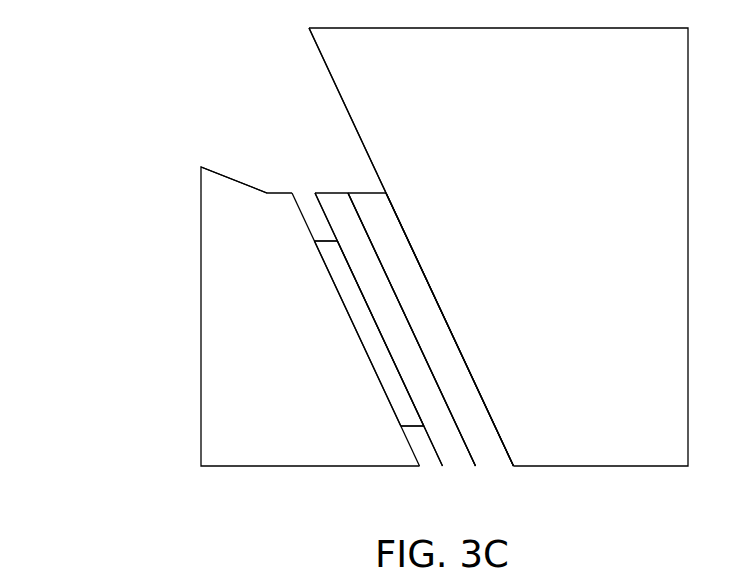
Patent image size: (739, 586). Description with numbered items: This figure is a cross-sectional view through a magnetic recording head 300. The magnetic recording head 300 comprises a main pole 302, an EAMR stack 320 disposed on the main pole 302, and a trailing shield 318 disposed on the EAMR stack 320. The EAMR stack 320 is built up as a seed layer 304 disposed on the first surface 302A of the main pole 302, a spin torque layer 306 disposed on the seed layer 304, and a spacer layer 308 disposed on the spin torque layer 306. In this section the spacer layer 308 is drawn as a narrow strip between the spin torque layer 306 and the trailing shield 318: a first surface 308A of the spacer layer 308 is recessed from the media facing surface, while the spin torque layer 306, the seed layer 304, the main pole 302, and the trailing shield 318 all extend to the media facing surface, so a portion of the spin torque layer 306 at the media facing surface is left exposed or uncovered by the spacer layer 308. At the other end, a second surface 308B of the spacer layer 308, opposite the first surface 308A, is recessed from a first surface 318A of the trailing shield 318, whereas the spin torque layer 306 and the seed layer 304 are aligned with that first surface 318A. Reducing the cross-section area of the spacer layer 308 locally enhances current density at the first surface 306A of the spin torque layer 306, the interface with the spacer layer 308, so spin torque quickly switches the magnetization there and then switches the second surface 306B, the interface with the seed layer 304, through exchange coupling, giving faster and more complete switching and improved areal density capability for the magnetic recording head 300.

The magnetic recording head 300 is at (116, 90).
The main pole 302 is at (560, 100).
The first surface of the main pole 302A is at (330, 73).
The seed layer 304 is at (422, 303).
The spin torque layer 306 is at (336, 203).
The first surface of the STL 306A is at (395, 365).
The second surface of the STL 306B is at (427, 362).
The spacer layer 308 is at (358, 312).
The first surface of the spacer layer 308A is at (422, 428).
The second surface of the spacer layer 308B is at (323, 240).
The trailing shield 318 is at (270, 443).
The first surface of the trailing shield 318A is at (240, 178).
The EAMR stack 320 is at (505, 396).